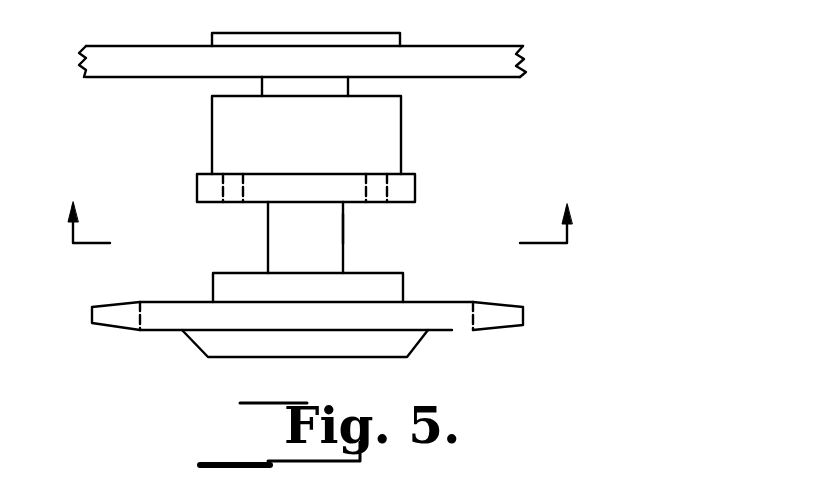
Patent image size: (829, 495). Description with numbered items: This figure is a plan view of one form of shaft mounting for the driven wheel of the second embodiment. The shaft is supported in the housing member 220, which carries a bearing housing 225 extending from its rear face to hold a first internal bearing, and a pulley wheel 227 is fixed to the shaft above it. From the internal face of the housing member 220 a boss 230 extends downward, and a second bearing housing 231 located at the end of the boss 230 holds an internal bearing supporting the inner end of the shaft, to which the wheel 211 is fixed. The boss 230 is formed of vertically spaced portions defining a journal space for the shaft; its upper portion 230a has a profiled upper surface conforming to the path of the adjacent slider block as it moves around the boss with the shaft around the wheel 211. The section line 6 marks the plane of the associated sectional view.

The pulley wheel 227 is at (526, 62).
The bearing housing 225 is at (389, 118).
The housing member 220 is at (406, 190).
The boss 230 is at (258, 227).
The upper portion of the boss 230a is at (333, 228).
The bearing housing 231 is at (391, 285).
The wheel 211 is at (466, 317).
The section line 6- 6 is at (321, 203).